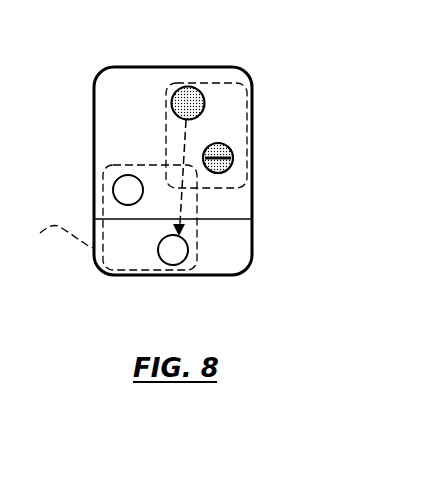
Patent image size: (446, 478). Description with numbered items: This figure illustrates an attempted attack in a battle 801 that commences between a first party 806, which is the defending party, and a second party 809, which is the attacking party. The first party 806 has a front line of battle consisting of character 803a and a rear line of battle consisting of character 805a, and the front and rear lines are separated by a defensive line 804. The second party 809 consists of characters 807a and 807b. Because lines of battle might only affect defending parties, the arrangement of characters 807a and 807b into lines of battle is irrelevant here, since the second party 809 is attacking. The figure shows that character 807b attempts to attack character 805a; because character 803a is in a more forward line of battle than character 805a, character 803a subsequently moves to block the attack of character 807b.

The battle 801 is at (100, 273).
The character 803a is at (103, 193).
The defensive line 804 is at (252, 219).
The character 805a is at (184, 260).
The first party 806 is at (52, 240).
The character 807a is at (233, 158).
The character 807b is at (188, 87).
The second party 809 is at (166, 107).